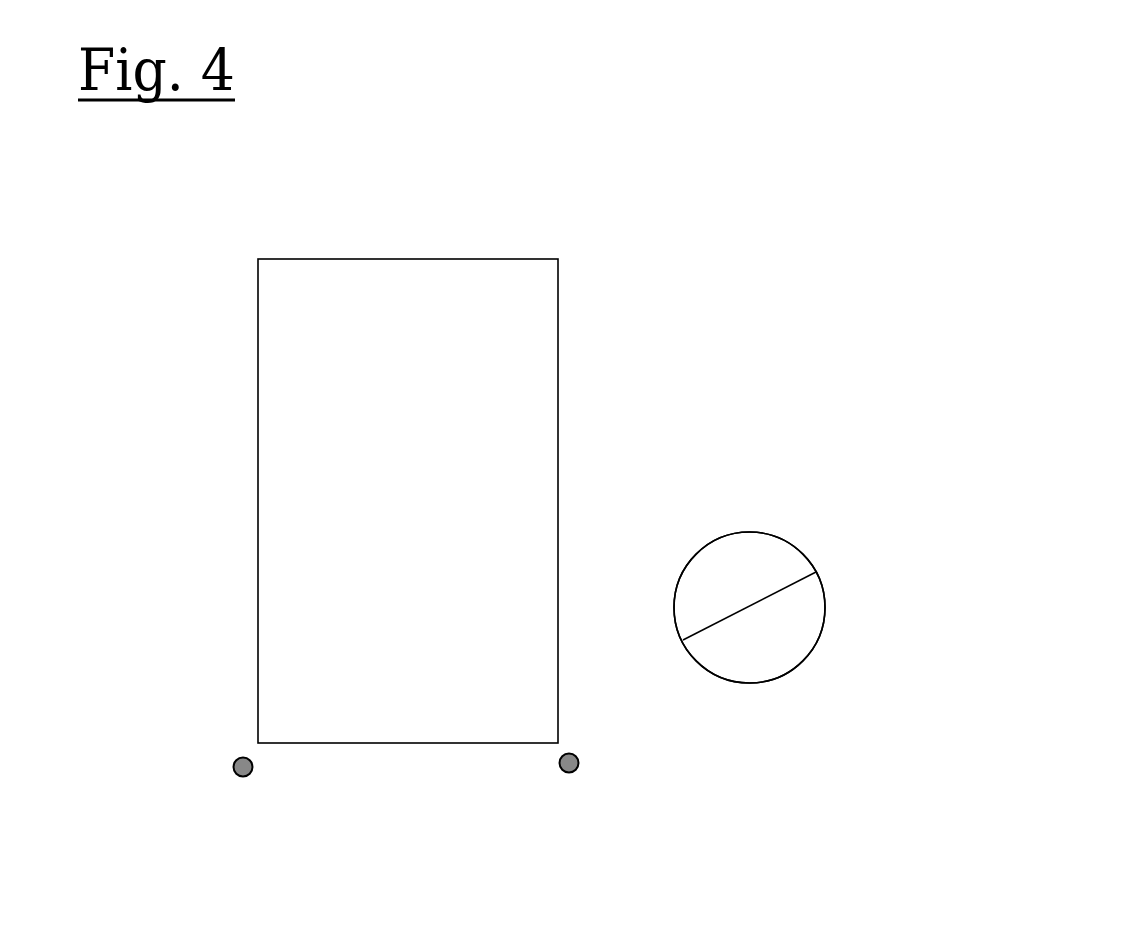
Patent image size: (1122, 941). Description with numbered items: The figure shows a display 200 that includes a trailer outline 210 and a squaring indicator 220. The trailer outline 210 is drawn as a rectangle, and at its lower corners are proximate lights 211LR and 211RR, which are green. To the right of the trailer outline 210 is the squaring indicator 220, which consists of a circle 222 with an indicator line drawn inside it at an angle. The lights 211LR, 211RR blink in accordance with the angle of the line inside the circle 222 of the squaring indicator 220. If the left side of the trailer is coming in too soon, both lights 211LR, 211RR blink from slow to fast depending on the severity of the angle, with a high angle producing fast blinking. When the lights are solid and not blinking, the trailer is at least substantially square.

The display 200 is at (759, 137).
The trailer outline 210 is at (685, 330).
The squaring indicator 220 is at (810, 506).
The circle 222 is at (821, 654).
The light 211LR is at (220, 750).
The light 211RR is at (596, 764).